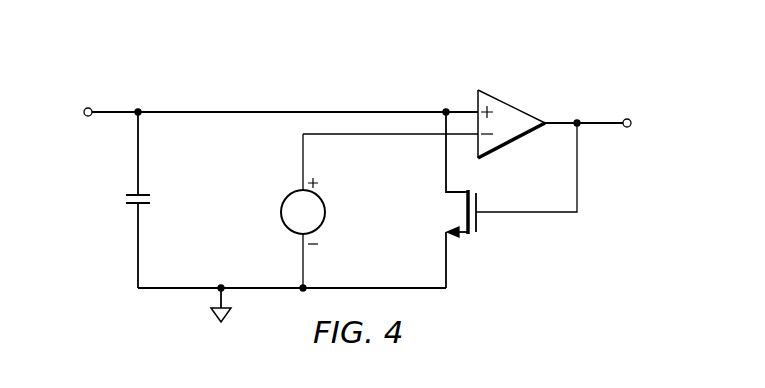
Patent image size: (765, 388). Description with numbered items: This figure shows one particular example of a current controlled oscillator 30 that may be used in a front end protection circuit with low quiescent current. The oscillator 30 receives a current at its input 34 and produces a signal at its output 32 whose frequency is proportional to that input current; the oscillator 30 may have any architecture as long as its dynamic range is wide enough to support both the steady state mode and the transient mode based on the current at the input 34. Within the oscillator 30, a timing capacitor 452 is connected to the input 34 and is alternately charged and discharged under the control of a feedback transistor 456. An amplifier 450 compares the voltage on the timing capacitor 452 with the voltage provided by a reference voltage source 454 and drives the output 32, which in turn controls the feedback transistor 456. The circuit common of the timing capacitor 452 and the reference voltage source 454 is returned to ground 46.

The oscillator 30 is at (238, 80).
The input 34 is at (118, 112).
The output 32 is at (600, 123).
The amplifier 450 is at (512, 102).
The timing capacitor 452 is at (126, 199).
The reference voltage source 454 is at (281, 212).
The feedback transistor 456 is at (489, 225).
The ground 46 is at (211, 321).